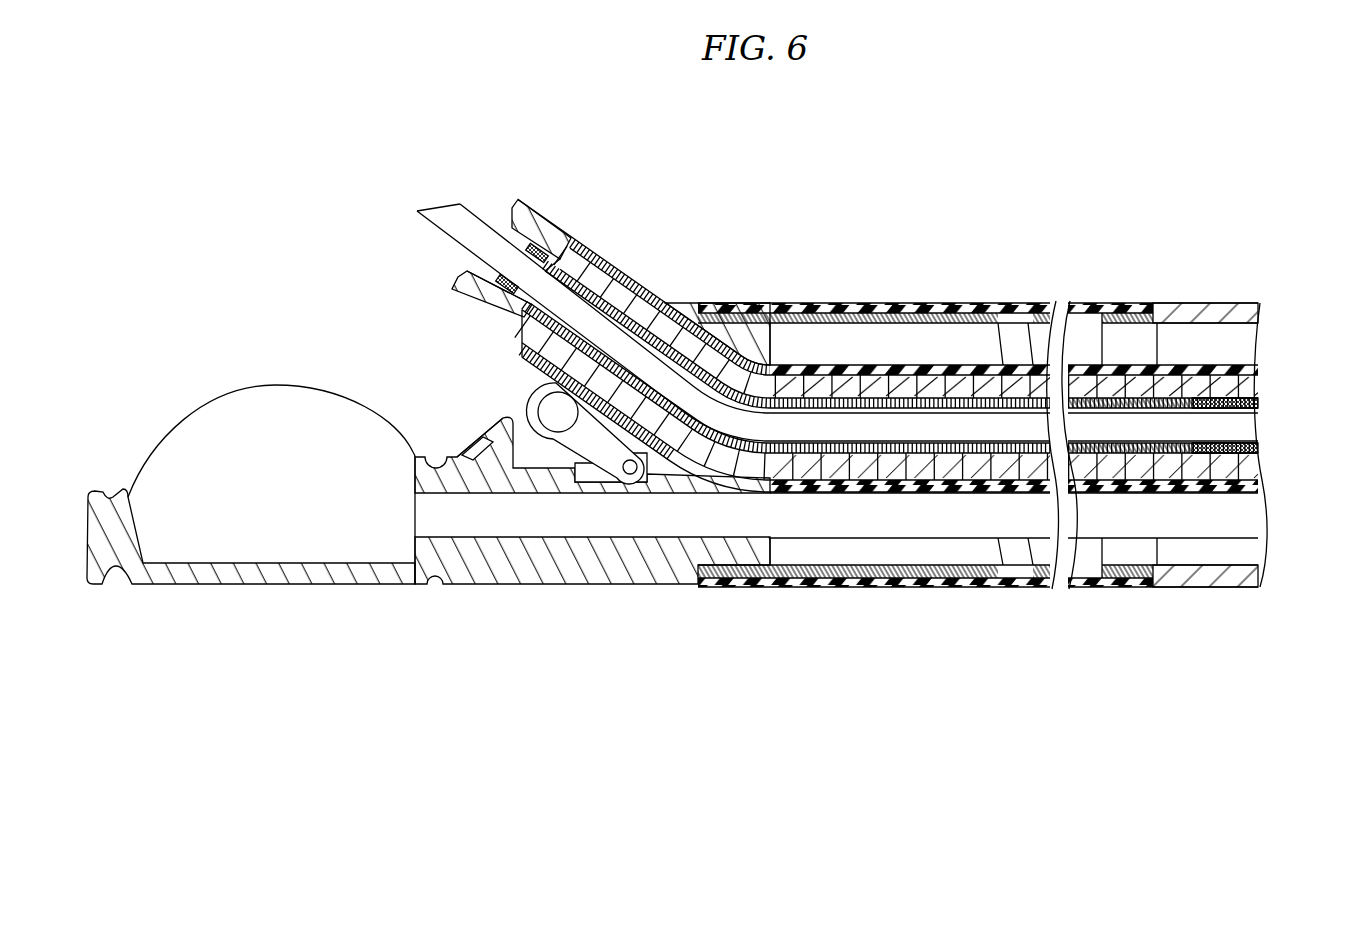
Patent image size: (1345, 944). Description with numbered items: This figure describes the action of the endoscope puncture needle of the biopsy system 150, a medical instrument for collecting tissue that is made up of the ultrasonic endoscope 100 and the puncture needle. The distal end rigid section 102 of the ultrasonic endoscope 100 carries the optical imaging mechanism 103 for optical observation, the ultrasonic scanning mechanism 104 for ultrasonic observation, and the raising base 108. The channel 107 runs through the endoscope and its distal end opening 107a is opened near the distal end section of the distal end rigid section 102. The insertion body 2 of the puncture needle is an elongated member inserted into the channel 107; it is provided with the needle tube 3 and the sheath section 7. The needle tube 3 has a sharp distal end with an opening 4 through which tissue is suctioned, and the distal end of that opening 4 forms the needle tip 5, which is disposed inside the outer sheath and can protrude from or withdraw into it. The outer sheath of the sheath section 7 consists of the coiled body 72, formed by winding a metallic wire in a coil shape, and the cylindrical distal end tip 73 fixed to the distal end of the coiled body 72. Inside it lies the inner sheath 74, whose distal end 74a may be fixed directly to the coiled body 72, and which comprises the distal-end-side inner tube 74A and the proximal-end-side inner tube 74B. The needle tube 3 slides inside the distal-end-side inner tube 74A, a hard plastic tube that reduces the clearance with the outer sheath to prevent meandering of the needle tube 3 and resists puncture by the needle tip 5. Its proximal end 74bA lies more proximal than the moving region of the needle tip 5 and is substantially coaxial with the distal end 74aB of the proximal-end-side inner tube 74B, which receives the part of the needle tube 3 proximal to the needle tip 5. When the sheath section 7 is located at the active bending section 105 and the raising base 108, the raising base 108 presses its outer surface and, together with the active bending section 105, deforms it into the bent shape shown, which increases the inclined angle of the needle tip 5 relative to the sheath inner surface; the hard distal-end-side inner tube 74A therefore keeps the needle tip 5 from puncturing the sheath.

The biopsy system 150 is at (316, 170).
The ultrasonic endoscope 100 is at (318, 316).
The ultrasonic scanning mechanism 104 is at (176, 414).
The optical imaging mechanism 103 is at (478, 437).
The distal end rigid section 102 is at (462, 455).
The raising base 108 is at (545, 440).
The channel 107 is at (868, 364).
The distal end opening 107a is at (672, 306).
The active bending section 105 is at (942, 338).
The insertion body 2 is at (628, 274).
The sheath section 7 is at (578, 230).
The coiled body 72 is at (704, 346).
The distal end tip 73 is at (540, 222).
The opening 4 is at (438, 204).
The needle tip 5 is at (418, 211).
The needle tube 3 is at (483, 228).
The inner sheath 74 is at (506, 300).
The distal end of the inner sheath 74a is at (503, 276).
The distal-end-side inner tube 74A is at (1177, 397).
The proximal-end-side inner tube 74B is at (1213, 397).
The proximal end of the distal-end-side inner tube 74bA is at (1193, 412).
The distal end of the proximal-end-side inner tube 74aB is at (1192, 446).